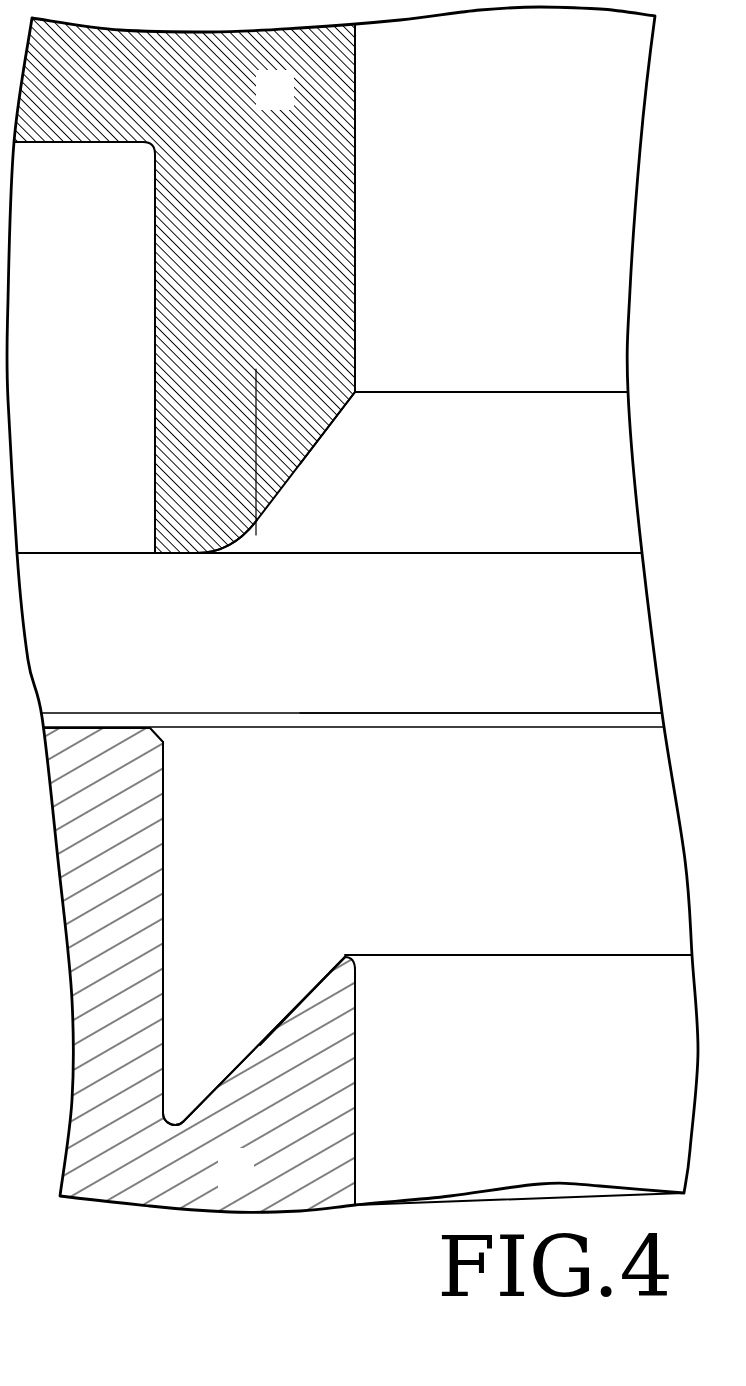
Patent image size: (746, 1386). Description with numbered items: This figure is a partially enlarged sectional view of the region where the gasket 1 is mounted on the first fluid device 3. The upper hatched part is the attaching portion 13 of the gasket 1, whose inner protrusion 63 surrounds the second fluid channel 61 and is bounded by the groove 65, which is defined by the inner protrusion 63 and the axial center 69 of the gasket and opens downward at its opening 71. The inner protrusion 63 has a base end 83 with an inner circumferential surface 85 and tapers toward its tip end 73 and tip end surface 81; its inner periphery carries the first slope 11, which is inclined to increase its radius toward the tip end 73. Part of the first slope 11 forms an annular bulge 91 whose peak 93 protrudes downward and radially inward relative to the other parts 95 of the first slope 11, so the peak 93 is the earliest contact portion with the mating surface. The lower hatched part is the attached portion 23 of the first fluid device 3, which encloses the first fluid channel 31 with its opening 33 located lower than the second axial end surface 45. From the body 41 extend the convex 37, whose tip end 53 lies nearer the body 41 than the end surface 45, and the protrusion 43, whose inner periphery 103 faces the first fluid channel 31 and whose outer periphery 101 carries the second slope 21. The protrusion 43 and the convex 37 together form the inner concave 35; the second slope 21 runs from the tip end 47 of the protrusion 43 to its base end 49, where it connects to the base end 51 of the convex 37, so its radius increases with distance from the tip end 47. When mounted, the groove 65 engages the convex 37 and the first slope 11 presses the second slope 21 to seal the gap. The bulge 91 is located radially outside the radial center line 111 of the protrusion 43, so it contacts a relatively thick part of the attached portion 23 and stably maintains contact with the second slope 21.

The gasket 1 is at (290, 104).
The first fluid device 3 is at (252, 1182).
The first slope 11 is at (302, 462).
The attaching portion 13 is at (420, 562).
The second slope 21 is at (252, 1050).
The attached portion 23 is at (596, 705).
The first fluid channel 31 is at (566, 1113).
The opening 33 is at (600, 955).
The inner concave 35 is at (194, 964).
The convex 37 is at (170, 797).
The body 41 is at (357, 1185).
The protrusion 43 is at (356, 1025).
The second axial end surface 45 is at (473, 713).
The tip end 47 is at (343, 957).
The base end 49 is at (357, 1101).
The base end 51 is at (110, 1127).
The tip end 53 is at (125, 728).
The second fluid channel 61 is at (543, 288).
The inner protrusion 63 is at (358, 342).
The groove 65 is at (90, 530).
The axial center 69 is at (87, 127).
The opening 71 is at (114, 553).
The tip end 73 is at (177, 553).
The tip end surface 81 is at (157, 553).
The base end 83 is at (315, 143).
The inner circumferential surface 85 is at (355, 230).
The bulge 91 is at (246, 539).
The peak 93 is at (240, 553).
The other parts 95 is at (320, 435).
The outer periphery 101 is at (305, 993).
The inner periphery 103 is at (357, 1063).
The radial center line 111 is at (255, 407).